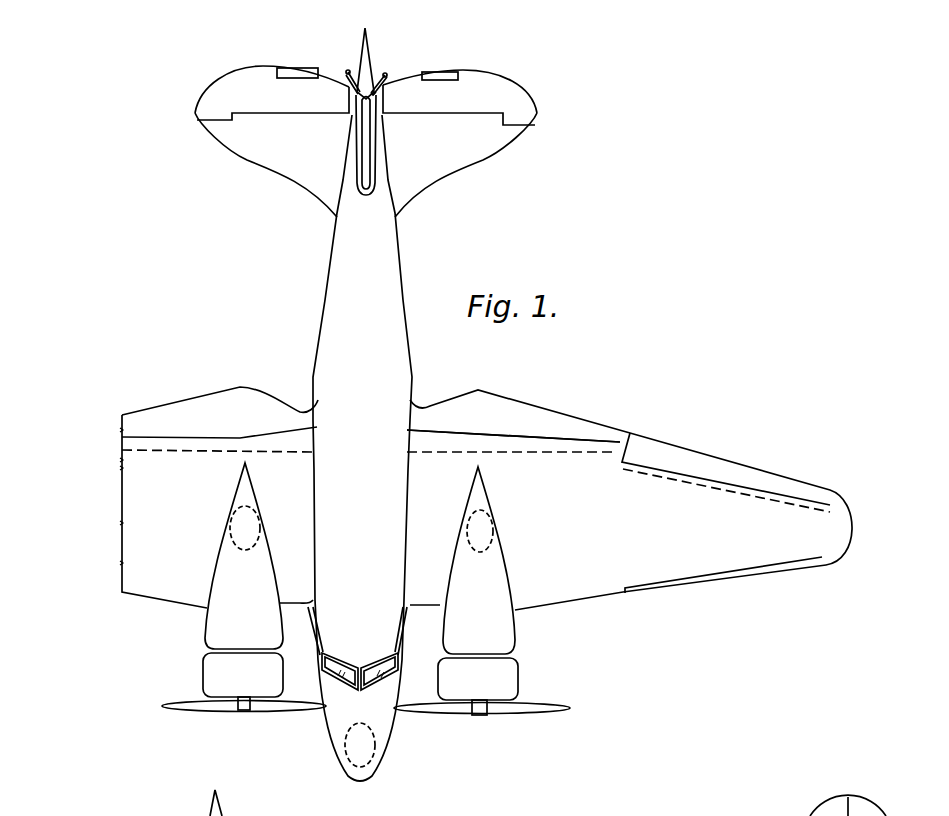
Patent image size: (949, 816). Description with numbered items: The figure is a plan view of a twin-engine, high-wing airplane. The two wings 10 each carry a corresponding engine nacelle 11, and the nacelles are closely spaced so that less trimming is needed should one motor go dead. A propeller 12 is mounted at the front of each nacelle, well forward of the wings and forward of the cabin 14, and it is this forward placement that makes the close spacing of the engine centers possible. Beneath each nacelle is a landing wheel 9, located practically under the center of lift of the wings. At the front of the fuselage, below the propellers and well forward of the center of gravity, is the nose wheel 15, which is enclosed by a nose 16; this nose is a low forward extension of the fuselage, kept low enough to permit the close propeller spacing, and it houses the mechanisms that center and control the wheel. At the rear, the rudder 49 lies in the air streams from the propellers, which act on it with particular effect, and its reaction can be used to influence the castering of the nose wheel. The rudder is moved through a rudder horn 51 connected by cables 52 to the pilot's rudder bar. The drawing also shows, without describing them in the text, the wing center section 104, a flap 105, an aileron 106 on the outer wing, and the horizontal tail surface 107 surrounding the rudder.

The landing wheel 9 is at (260, 524).
The wing 10 is at (486, 498).
The engine nacelle 11 is at (220, 538).
The propeller 12 is at (203, 707).
The cabin 14 is at (357, 648).
The nose wheel 15 is at (377, 753).
The nose 16 is at (360, 775).
The rudder 49 is at (362, 50).
The rudder horn 51 is at (387, 77).
The cable 52 is at (387, 83).
The wing center section 104 is at (513, 426).
The wing flap 105 is at (726, 472).
The aileron 106 is at (722, 575).
The horizontal stabilizer 107 is at (366, 141).